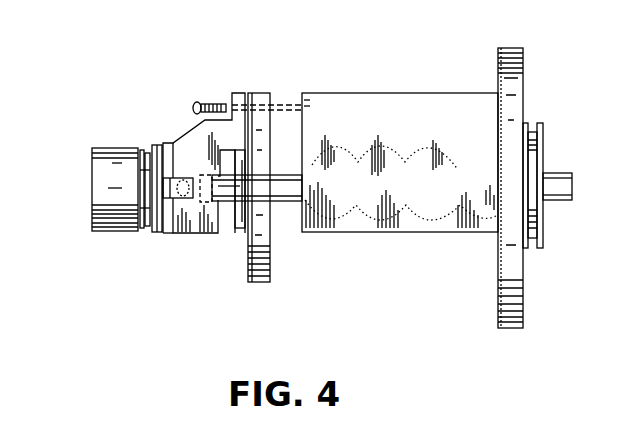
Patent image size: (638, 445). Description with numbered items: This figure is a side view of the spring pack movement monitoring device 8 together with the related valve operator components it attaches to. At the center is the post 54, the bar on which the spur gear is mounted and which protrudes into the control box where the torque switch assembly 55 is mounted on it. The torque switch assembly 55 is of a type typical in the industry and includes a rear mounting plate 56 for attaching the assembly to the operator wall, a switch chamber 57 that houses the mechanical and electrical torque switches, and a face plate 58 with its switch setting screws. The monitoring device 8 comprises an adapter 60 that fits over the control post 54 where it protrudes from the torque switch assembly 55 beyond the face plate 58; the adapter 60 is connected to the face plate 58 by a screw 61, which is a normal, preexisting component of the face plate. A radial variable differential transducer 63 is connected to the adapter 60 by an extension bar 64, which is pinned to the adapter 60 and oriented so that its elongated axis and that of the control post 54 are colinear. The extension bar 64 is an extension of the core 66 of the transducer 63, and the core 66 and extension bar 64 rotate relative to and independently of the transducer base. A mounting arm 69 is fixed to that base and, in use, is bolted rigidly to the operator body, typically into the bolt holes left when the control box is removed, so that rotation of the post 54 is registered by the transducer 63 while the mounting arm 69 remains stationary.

The spring pack movement monitoring device 8 is at (236, 248).
The post 54 is at (228, 178).
The torque switch assembly 55 is at (360, 91).
The rear mounting plate 56 is at (522, 50).
The switch chamber 57 is at (148, 229).
The face plate 58 is at (271, 262).
The adapter 60 is at (184, 129).
The screw 61 is at (208, 102).
The radial variable differential transducer 63 is at (121, 139).
The extension bar 64 is at (188, 198).
The core 66 is at (92, 216).
The mounting arm 69 is at (158, 233).